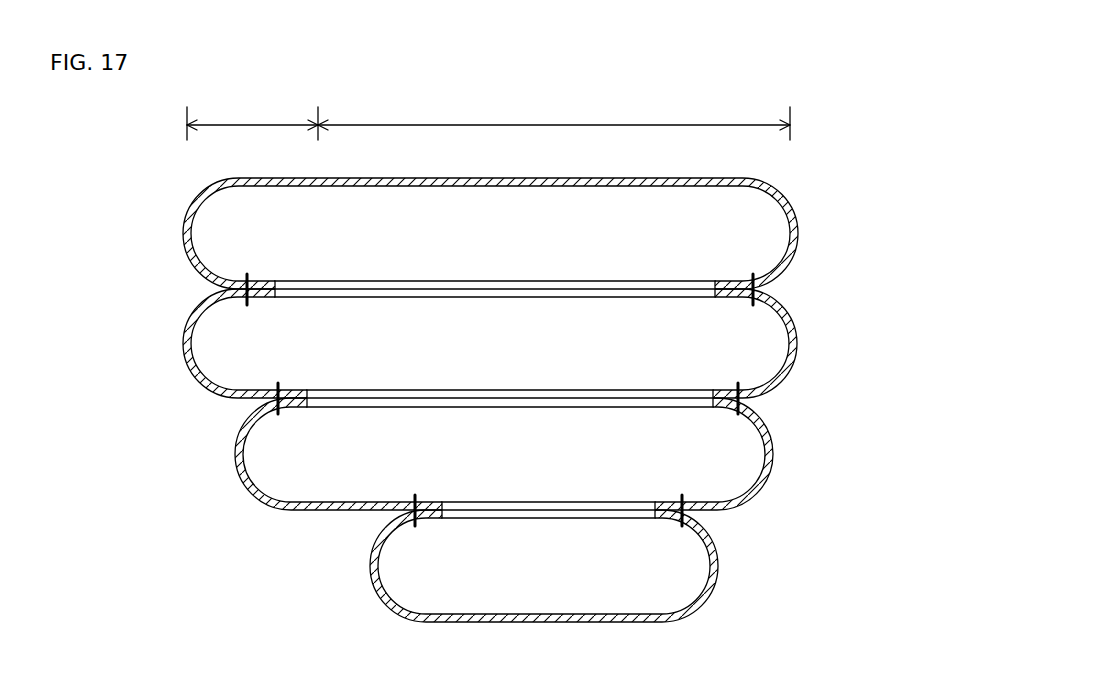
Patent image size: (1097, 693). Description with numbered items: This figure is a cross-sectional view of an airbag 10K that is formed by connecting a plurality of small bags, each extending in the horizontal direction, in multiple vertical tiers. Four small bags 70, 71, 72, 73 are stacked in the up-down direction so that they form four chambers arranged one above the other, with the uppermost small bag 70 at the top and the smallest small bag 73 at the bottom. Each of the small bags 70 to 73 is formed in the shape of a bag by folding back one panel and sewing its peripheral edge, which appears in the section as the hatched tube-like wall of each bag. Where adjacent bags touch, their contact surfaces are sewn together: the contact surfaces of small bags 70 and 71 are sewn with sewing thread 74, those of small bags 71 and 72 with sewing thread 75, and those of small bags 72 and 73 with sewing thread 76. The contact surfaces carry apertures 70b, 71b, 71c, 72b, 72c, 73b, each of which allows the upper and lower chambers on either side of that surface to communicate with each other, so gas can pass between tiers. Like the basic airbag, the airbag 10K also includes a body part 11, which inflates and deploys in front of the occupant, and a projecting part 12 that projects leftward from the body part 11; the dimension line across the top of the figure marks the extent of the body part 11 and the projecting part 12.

The airbag 10K is at (157, 350).
The body part 11 is at (554, 116).
The projecting part 12 is at (252, 116).
The small bag 70 is at (797, 230).
The aperture 70b is at (525, 281).
The small bag 71 is at (797, 345).
The aperture 71b is at (528, 300).
The aperture 71c is at (570, 390).
The small bag 72 is at (773, 455).
The aperture 72b is at (540, 410).
The aperture 72c is at (592, 502).
The small bag 73 is at (718, 575).
The aperture 73b is at (542, 521).
The sewing thread 74 is at (248, 276).
The sewing thread 75 is at (280, 385).
The sewing thread 76 is at (417, 498).